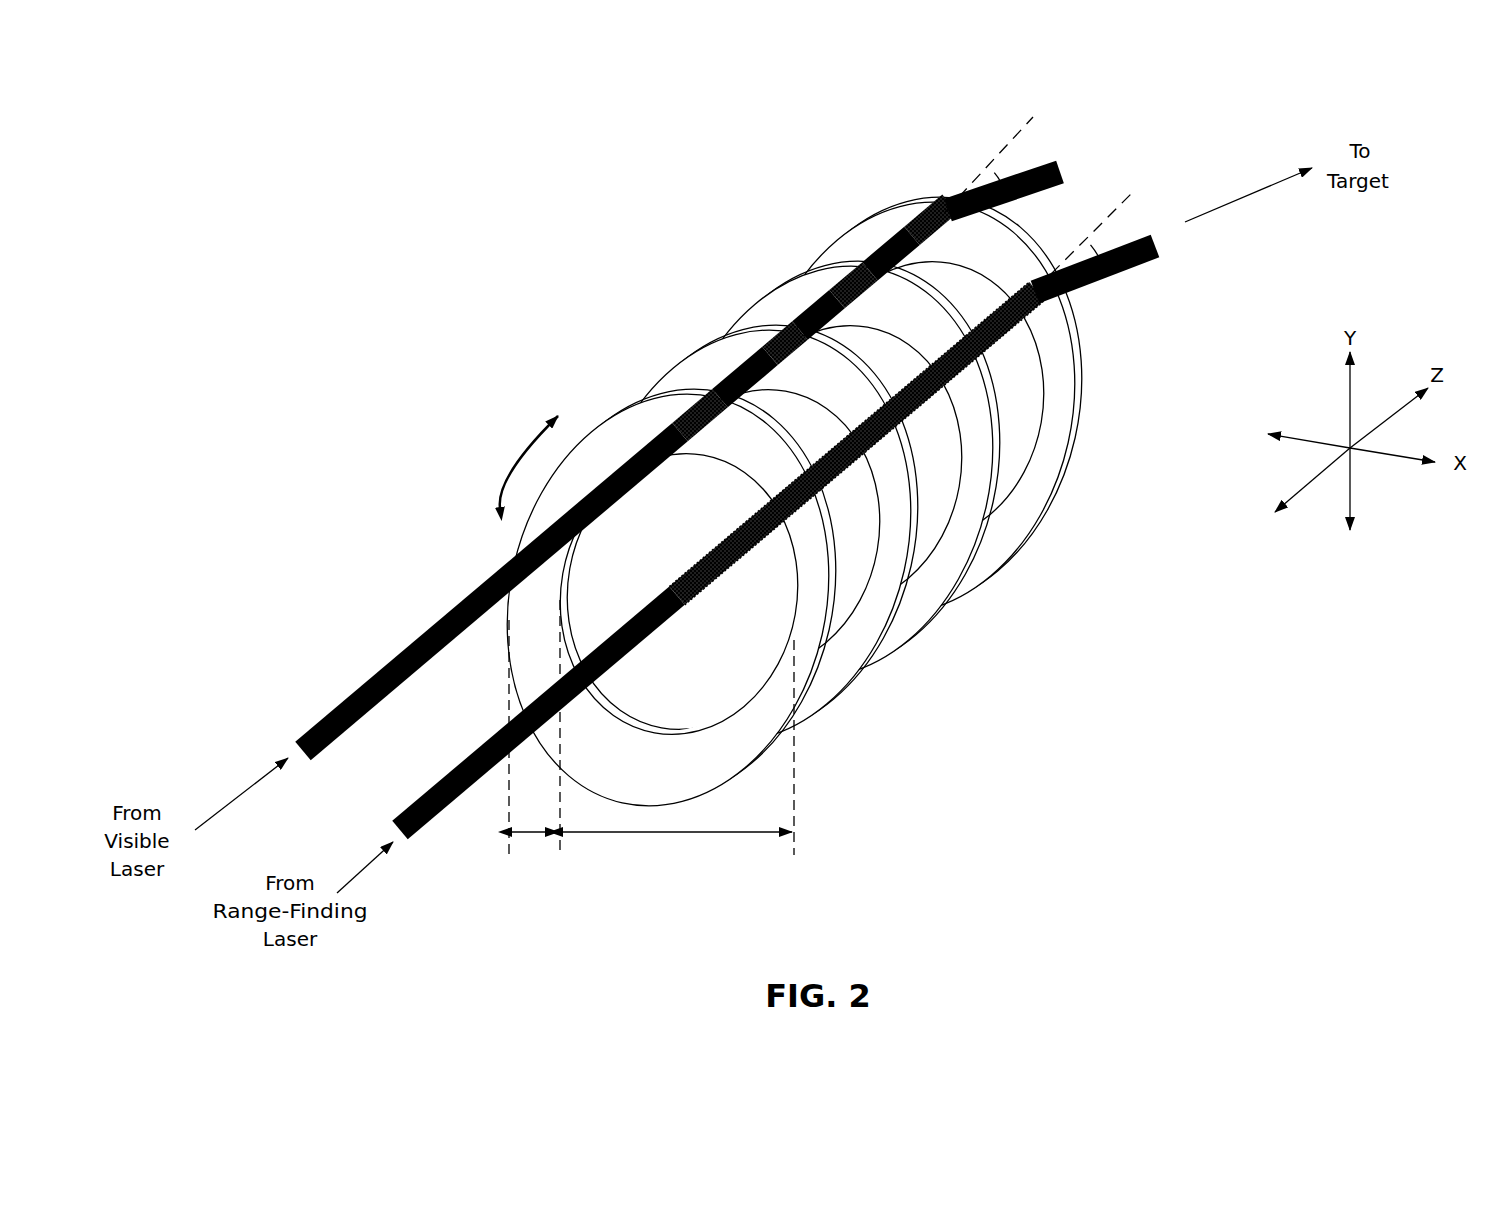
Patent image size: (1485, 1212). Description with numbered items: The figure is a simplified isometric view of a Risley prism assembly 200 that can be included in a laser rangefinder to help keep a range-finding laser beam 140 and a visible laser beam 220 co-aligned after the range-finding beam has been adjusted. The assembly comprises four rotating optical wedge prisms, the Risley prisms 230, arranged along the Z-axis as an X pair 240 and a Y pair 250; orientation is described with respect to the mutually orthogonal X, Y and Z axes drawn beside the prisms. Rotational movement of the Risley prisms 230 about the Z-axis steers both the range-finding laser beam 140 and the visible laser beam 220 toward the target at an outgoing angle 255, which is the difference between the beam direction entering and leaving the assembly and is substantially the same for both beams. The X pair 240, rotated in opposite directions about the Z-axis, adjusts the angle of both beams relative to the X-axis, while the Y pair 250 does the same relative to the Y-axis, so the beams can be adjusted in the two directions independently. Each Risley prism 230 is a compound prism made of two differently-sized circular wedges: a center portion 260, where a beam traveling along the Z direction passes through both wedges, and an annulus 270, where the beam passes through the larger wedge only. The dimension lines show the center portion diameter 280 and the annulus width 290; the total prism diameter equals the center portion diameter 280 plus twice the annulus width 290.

The Risley prism assembly 200 is at (298, 232).
The Risley prisms 230 is at (845, 240).
The X pair 240 is at (807, 723).
The Y pair 250 is at (950, 610).
The outgoing angle 255 is at (1030, 140).
The visible laser beam 220 is at (387, 660).
The range-finding laser beam 140 is at (433, 820).
The center portion 260 is at (682, 592).
The annulus 270 is at (763, 742).
The center portion diameter 280 is at (665, 833).
The annulus width 290 is at (532, 834).